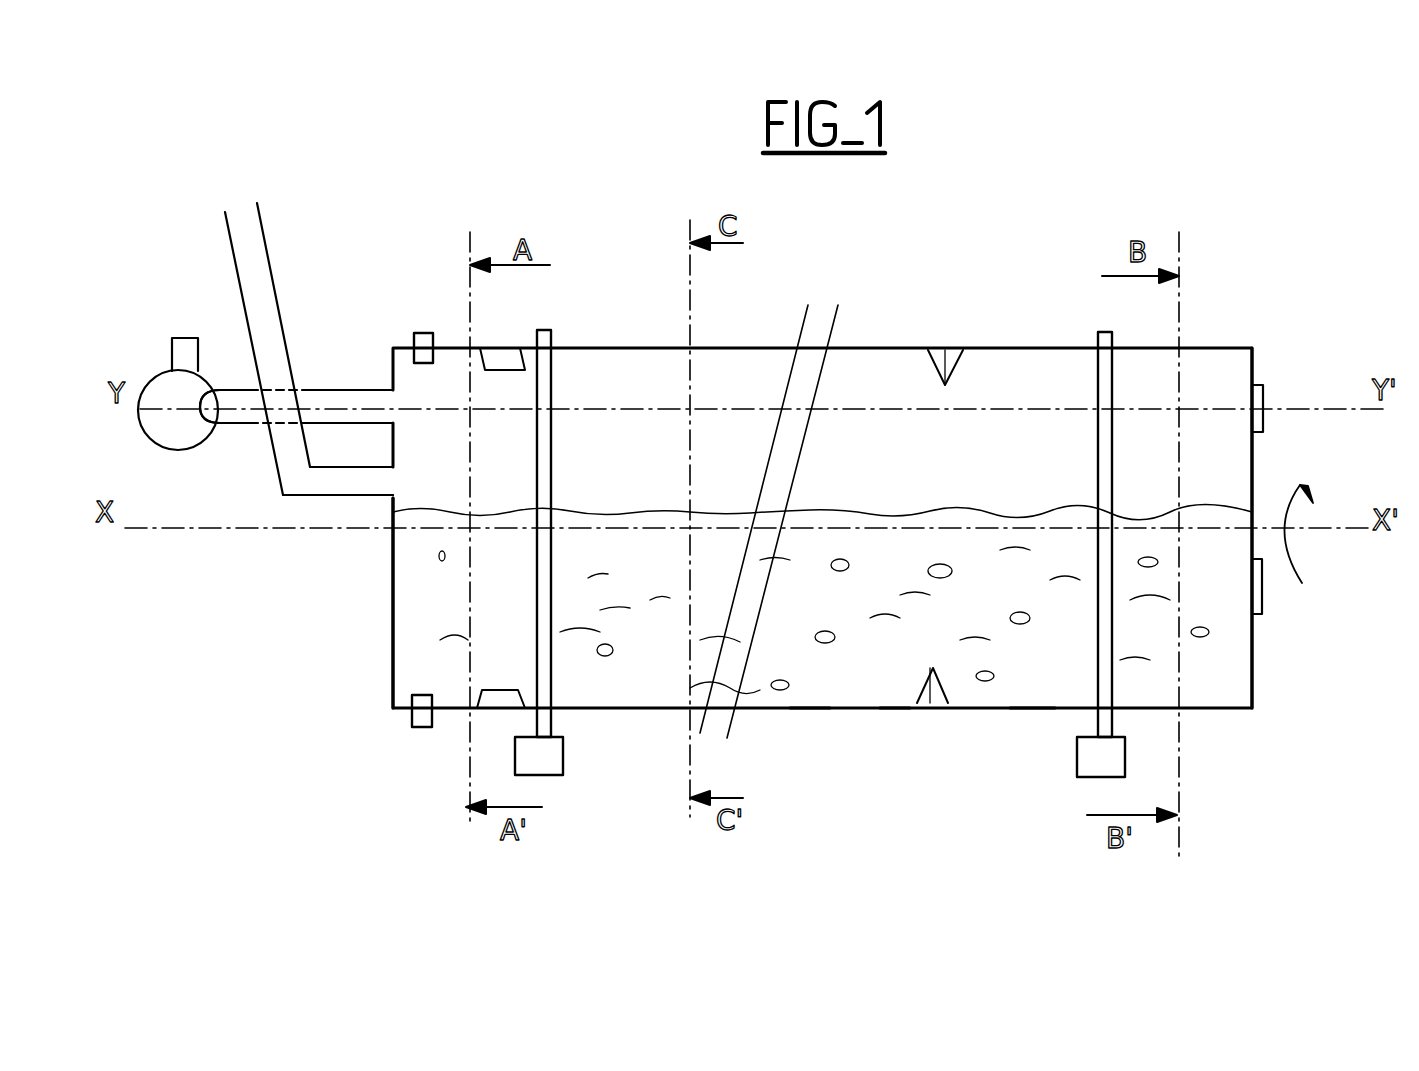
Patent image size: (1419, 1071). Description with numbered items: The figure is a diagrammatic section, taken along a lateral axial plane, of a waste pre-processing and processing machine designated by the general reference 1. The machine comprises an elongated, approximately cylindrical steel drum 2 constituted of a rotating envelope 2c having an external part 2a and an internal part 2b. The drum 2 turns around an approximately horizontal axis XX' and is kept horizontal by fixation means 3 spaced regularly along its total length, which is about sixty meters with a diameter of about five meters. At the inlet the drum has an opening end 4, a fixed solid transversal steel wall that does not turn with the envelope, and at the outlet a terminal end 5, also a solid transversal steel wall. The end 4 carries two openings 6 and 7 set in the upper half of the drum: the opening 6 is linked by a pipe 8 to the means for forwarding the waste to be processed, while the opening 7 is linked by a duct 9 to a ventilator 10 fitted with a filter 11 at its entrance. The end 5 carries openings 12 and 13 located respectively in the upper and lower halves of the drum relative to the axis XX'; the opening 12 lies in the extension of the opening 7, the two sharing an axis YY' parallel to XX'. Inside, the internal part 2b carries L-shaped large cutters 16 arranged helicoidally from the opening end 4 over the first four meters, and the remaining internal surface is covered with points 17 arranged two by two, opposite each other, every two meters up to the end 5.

The waste pre-processing and processing machine 1 is at (317, 755).
The drum 2 is at (860, 740).
The external part 2a is at (810, 710).
The internal part 2b is at (1018, 708).
The rotating envelope 2c is at (895, 710).
The fixation means 3 is at (563, 757).
The opening end 4 is at (393, 653).
The terminal end 5 is at (1252, 683).
The opening 6 is at (355, 480).
The opening 7 is at (388, 420).
The pipe 8 is at (325, 500).
The pipe portion 9 is at (242, 428).
The ventilator 10 is at (160, 370).
The filter 11 is at (202, 417).
The opening 12 is at (1263, 390).
The opening 13 is at (1262, 600).
The large cutters 16 is at (500, 352).
The points 17 is at (950, 352).